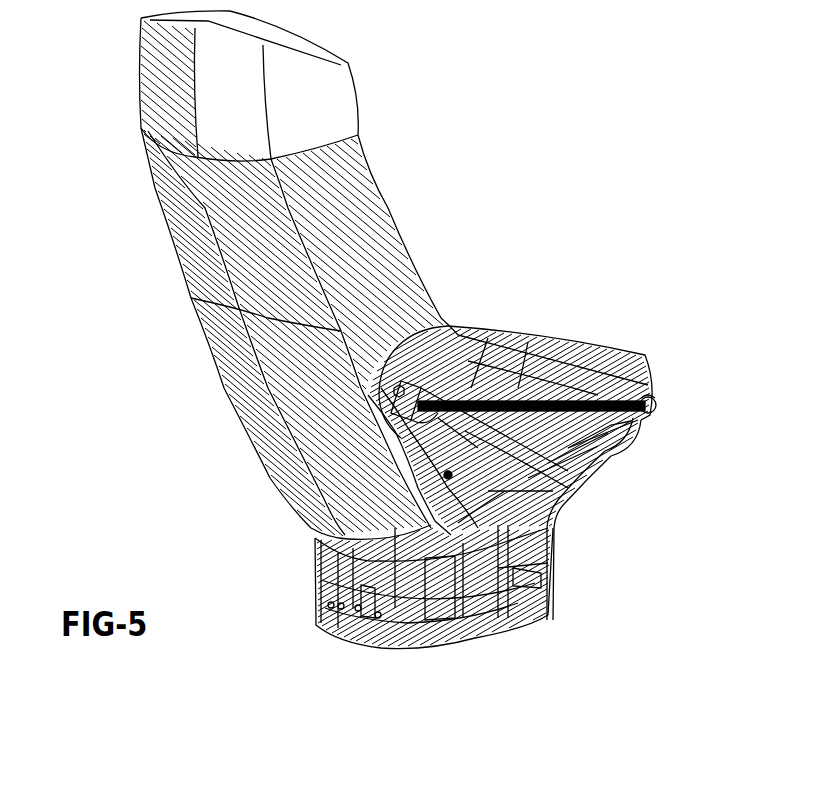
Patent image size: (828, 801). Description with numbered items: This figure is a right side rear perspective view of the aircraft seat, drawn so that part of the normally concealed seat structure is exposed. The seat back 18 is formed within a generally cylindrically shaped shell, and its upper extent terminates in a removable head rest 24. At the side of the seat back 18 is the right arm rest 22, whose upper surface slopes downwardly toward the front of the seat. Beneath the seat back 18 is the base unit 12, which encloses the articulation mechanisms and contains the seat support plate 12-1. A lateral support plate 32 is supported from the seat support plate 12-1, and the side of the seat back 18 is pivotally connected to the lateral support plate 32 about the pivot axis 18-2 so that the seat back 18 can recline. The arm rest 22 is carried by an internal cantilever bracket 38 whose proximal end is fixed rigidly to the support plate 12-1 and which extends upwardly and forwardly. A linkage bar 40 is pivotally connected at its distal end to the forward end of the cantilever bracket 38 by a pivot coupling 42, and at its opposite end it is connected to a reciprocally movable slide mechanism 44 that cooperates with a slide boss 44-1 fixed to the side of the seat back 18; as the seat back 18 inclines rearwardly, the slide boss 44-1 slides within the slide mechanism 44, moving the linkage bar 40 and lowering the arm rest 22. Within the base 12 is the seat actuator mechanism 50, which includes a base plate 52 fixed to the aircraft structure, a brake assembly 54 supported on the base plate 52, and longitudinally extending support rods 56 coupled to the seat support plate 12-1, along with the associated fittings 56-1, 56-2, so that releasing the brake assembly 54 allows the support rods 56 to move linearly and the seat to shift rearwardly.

The base unit 12 is at (553, 552).
The seat support plate 12-1 is at (335, 567).
The seat back 18 is at (272, 259).
The pivot axis 18-2 is at (440, 467).
The right side arm rest 22 is at (533, 333).
The removable head rest 24 is at (229, 108).
The lateral support plate 32 is at (497, 483).
The cantilever bracket 38 is at (604, 417).
The linkage bar 40 is at (560, 392).
The pivot coupling 42 is at (642, 362).
The slide mechanism 44 is at (420, 376).
The slide boss 44-1 is at (392, 384).
The seat actuator mechanism 50 is at (338, 617).
The base plate 52 is at (437, 613).
The brake assembly 54 is at (450, 610).
The support rods 56 is at (528, 587).
The drive gear 56-1 is at (533, 563).
The fasteners 56-2 is at (357, 602).